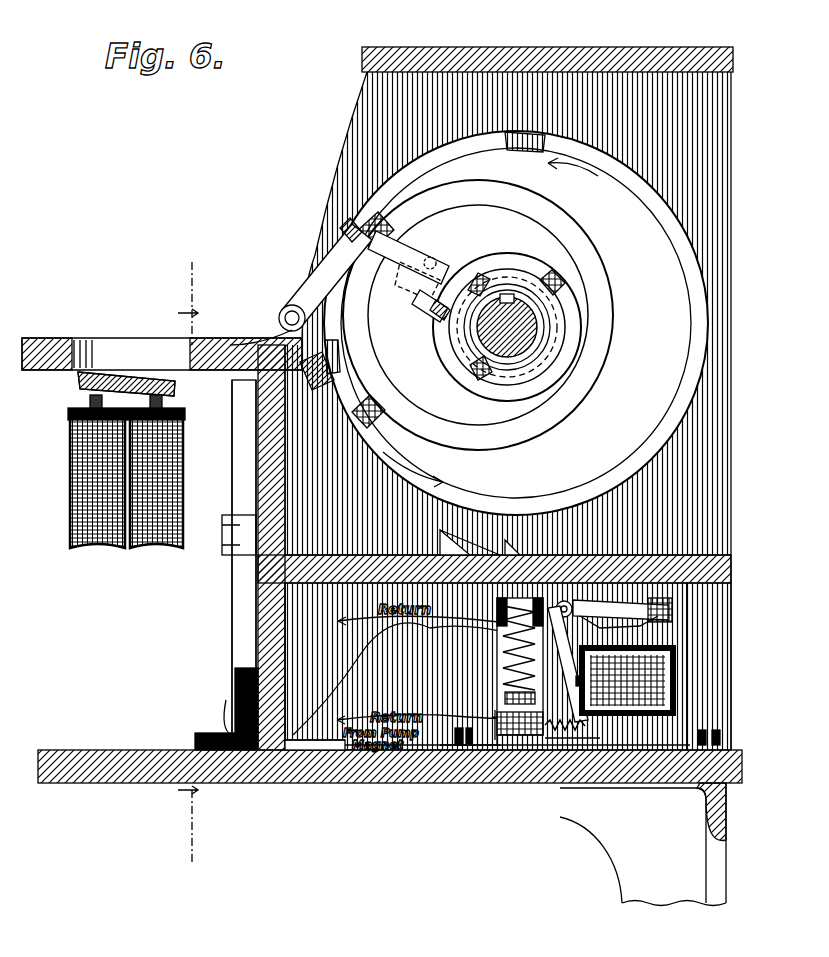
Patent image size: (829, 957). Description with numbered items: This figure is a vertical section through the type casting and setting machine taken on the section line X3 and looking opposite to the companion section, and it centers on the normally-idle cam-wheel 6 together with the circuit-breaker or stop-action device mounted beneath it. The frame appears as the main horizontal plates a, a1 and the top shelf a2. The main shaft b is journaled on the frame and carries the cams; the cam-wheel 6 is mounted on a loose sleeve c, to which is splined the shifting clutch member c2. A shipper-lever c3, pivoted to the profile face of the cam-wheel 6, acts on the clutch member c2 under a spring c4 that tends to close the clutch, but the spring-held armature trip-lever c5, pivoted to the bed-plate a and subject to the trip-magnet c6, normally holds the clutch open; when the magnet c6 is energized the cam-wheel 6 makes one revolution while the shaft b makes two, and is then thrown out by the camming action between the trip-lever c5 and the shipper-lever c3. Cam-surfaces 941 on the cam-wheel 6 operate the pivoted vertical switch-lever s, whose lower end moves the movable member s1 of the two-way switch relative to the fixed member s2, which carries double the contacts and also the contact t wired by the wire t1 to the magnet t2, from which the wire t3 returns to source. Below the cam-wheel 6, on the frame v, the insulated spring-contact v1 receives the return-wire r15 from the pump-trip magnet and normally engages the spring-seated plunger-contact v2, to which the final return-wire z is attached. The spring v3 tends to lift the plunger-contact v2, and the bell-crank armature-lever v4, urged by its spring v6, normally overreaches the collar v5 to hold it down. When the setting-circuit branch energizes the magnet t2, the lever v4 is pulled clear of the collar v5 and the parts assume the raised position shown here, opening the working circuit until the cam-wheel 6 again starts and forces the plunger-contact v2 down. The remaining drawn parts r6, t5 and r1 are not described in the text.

The main horizontal plate (bed-plate) a is at (46, 346).
The main horizontal plate a1 is at (76, 786).
The top shelf a2 is at (512, 70).
The section line X3 is at (178, 563).
The cam-wheel 6 is at (700, 362).
The cam-surfaces 941 is at (705, 242).
The main shaft b is at (560, 318).
The loose sleeve c is at (480, 348).
The shifting clutch member c2 is at (585, 338).
The shipper-lever c3 is at (440, 318).
The spring c4 is at (408, 265).
The armature trip-lever c5 is at (310, 266).
The trip-magnet c6 is at (68, 478).
The switch-lever s is at (232, 468).
The movable switch member s1 is at (234, 688).
The fixed switch member s2 is at (206, 733).
The contact t is at (232, 724).
The rod clip r6 is at (226, 620).
The frame v is at (684, 660).
The spring-contact v1 is at (460, 545).
The plunger-contact v2 is at (514, 552).
The spring v3 is at (504, 648).
The armature-lever v4 is at (600, 614).
The collar v5 is at (500, 786).
The spring v6 is at (675, 612).
The wire t1 is at (290, 786).
The magnet t2 is at (680, 684).
The wire t3 is at (511, 661).
The piston t5 is at (504, 690).
The return-wire z is at (478, 786).
The return-wire r15 is at (404, 786).
The base plate r1 is at (558, 786).